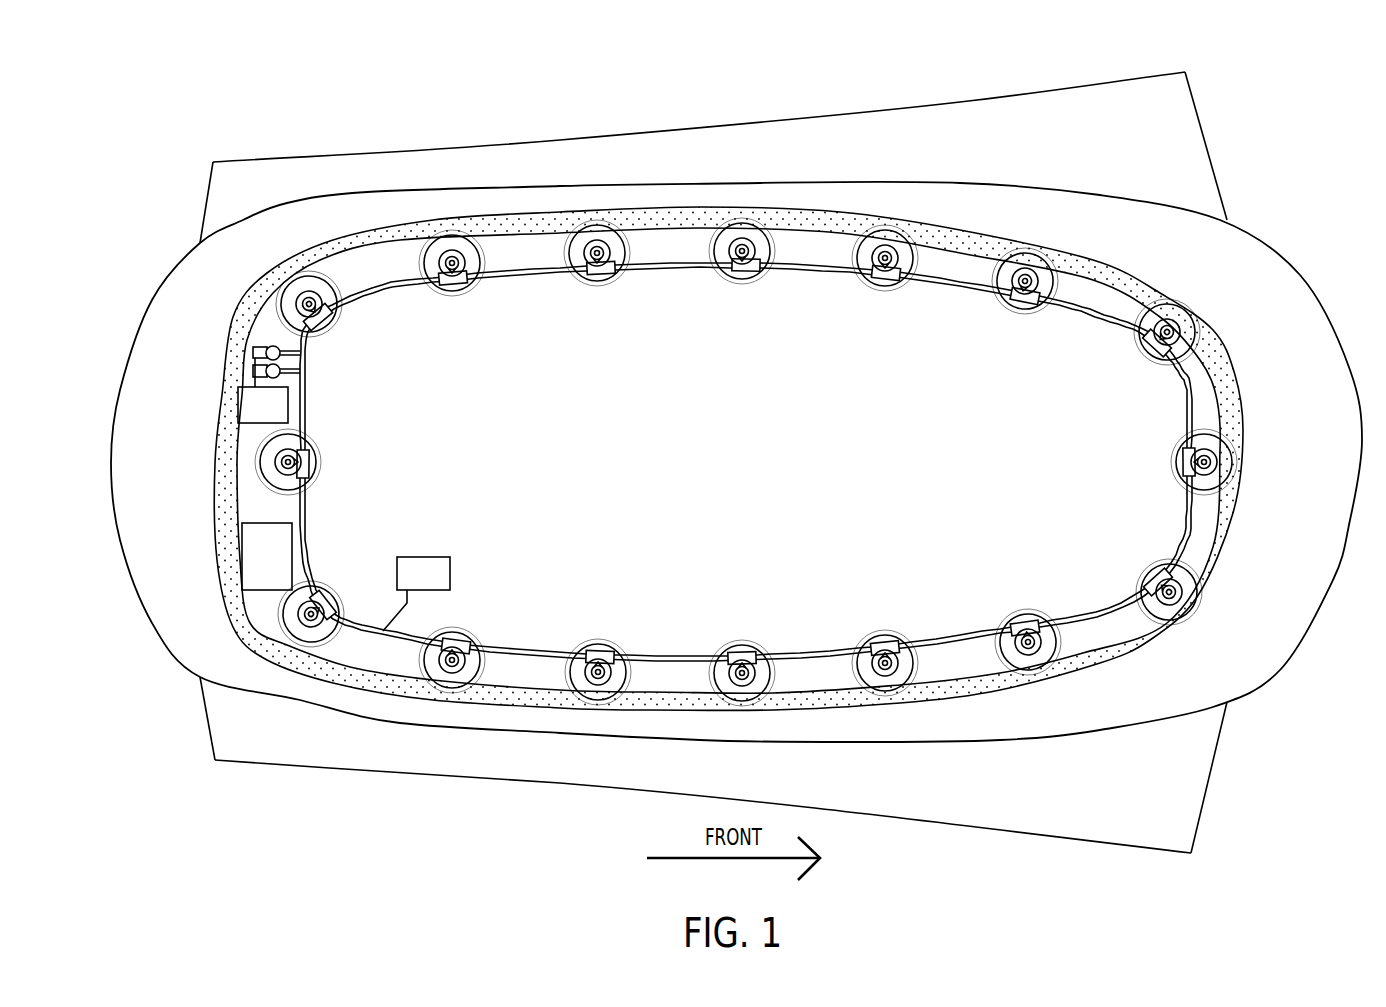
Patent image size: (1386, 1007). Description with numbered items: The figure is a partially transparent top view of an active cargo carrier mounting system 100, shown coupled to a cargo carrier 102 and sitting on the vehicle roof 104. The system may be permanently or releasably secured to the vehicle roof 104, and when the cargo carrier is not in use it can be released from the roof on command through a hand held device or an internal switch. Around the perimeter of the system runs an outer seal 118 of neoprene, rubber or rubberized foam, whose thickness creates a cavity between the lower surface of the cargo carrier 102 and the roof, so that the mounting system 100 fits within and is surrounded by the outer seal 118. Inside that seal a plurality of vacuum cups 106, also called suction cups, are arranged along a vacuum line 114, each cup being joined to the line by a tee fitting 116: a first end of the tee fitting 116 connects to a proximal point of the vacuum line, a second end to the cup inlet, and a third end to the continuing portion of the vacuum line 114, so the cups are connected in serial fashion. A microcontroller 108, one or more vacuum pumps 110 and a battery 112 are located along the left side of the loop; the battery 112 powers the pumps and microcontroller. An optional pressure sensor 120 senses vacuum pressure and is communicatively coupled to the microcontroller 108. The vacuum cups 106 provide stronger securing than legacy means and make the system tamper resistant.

The active cargo carrier mounting system 100 is at (193, 57).
The cargo carrier 102 is at (1283, 677).
The vehicle roof 104 is at (1232, 721).
The vacuum cup 106 is at (912, 260).
The microcontroller 108 is at (289, 405).
The vacuum pump 110 is at (300, 367).
The battery 112 is at (292, 546).
The vacuum line 114 is at (1107, 312).
The tee fitting 116 is at (744, 247).
The outer seal 118 is at (389, 243).
The pressure sensor 120 is at (450, 571).